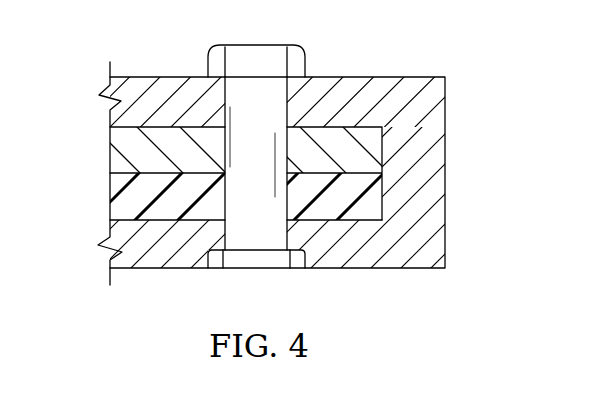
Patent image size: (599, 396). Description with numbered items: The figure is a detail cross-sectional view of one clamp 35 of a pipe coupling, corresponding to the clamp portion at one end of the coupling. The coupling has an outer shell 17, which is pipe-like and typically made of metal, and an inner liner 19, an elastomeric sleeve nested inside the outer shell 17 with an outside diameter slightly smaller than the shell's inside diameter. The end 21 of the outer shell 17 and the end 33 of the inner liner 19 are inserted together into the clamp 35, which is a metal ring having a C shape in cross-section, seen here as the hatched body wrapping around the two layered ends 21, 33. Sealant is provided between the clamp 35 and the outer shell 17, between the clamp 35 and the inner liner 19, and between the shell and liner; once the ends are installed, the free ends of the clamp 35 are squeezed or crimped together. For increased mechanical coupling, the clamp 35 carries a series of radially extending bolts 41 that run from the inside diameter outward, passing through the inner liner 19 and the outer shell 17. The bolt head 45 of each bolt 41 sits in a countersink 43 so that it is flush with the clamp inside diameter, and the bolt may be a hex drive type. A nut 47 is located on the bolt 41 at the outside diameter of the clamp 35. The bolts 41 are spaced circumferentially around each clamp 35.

The outer shell 17 is at (110, 160).
The inner liner 19 is at (110, 208).
The ends of the outer shell 21 is at (372, 143).
The ends of the inner liner 33 is at (370, 202).
The clamp 35 is at (413, 77).
The bolt 41 is at (233, 93).
The countersink 43 is at (282, 263).
The bolt head 45 is at (232, 260).
The nut 47 is at (307, 66).